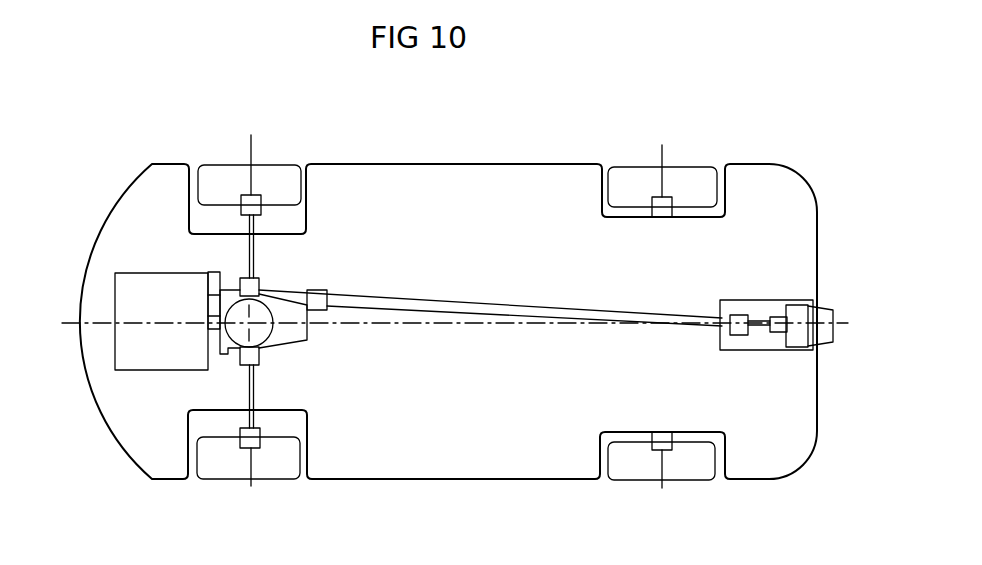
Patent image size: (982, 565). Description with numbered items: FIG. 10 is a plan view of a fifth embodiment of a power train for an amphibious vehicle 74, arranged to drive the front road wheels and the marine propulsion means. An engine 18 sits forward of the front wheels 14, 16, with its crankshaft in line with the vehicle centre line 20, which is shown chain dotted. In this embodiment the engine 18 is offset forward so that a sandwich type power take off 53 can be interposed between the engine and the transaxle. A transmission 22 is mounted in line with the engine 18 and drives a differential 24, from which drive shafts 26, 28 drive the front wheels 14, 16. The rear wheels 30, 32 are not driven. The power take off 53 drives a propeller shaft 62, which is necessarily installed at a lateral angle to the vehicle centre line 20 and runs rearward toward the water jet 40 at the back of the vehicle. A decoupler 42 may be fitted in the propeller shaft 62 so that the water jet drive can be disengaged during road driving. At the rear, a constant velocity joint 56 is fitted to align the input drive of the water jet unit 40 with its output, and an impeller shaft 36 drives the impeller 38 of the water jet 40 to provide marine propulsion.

The front wheel 14 is at (228, 183).
The front wheel 16 is at (230, 468).
The engine 18 is at (135, 293).
The vehicle centre line 20 is at (97, 323).
The transmission 22 is at (290, 312).
The differential 24 is at (255, 313).
The drive shaft 26 is at (246, 246).
The drive shaft 28 is at (245, 390).
The rear wheel 30 is at (637, 188).
The rear wheel 32 is at (677, 460).
The impeller shaft 36 is at (770, 327).
The impeller 38 is at (797, 315).
The water jet 40 is at (762, 307).
The decoupler 42 is at (321, 290).
The sandwich type power take off 53 is at (210, 331).
The constant velocity joint 56 is at (740, 328).
The propeller shaft 62 is at (394, 297).
The vehicle 74 is at (475, 287).